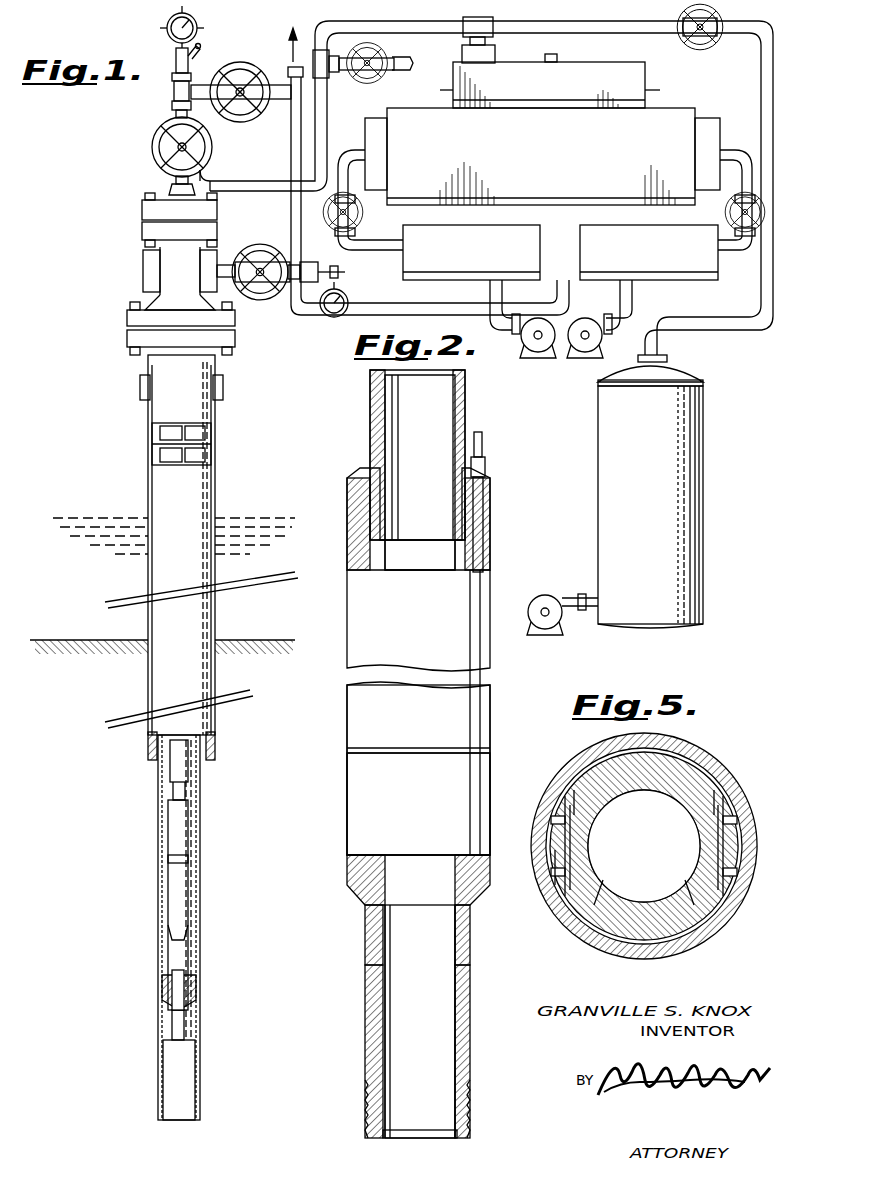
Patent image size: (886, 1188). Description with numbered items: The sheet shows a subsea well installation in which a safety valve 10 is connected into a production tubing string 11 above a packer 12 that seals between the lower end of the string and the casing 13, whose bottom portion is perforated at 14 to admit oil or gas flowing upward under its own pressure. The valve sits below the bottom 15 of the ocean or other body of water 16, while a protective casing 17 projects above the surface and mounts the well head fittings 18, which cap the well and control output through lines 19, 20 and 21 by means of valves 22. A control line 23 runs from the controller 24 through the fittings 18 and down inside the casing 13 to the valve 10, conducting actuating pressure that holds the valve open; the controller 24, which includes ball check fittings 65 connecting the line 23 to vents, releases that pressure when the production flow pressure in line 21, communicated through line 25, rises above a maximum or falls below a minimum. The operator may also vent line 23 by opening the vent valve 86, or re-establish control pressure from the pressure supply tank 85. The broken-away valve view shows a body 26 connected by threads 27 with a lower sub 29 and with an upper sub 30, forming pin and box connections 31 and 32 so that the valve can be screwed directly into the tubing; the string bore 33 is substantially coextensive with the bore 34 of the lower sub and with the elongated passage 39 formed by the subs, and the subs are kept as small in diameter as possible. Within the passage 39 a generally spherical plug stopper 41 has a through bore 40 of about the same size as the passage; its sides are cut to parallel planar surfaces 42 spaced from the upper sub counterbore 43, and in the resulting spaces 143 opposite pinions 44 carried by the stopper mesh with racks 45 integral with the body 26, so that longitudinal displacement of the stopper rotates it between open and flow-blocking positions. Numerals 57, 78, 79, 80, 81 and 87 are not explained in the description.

In FIG. 1, the safety valve 10 is at (168, 826).
In FIG. 2, the safety valve 10 is at (332, 751).
In FIG. 1, the production tubing string 11 is at (170, 436).
In FIG. 1, the packer 12 is at (198, 990).
In FIG. 1, the casing 13 is at (210, 462).
In FIG. 1, the perforations 14 is at (200, 1074).
In FIG. 1, the bottom of the ocean 15 is at (246, 640).
In FIG. 1, the body of water 16 is at (248, 518).
In FIG. 1, the protective casing 17 is at (210, 442).
In FIG. 1, the well head fittings 18 is at (130, 213).
In FIG. 1, the line 19 is at (176, 111).
In FIG. 1, the line 20 is at (193, 58).
In FIG. 1, the line 21 is at (292, 74).
In FIG. 1, the valves 22 is at (199, 149).
In FIG. 1, the control line 23 is at (328, 100).
In FIG. 1, the controller 24 is at (686, 98).
In FIG. 1, the line 25 is at (396, 313).
In FIG. 2, the body 26 is at (350, 804).
In FIG. 2, the threads 27 is at (350, 896).
In FIG. 2, the lower sub 29 is at (366, 932).
In FIG. 2, the upper sub 30 is at (350, 652).
In FIG. 5, the upper sub 30 is at (686, 750).
In FIG. 2, the pin connection 31 is at (368, 1108).
In FIG. 2, the box connection 32 is at (456, 524).
In FIG. 2, the string bore 33 is at (456, 494).
In FIG. 2, the bore of the lower sub 34 is at (456, 1024).
In FIG. 2, the elongated passage 39 is at (420, 839).
In FIG. 5, the elongated passage 39 is at (644, 846).
In FIG. 5, the through bore 40 is at (612, 800).
In FIG. 5, the plug stopper 41 is at (600, 894).
In FIG. 5, the planar surfaces 42 is at (722, 894).
In FIG. 5, the upper sub counterbore 43 is at (730, 888).
In FIG. 5, the pinions 44 is at (740, 822).
In FIG. 5, the racks 45 is at (728, 790).
In FIG. 2, the wire line 57 is at (486, 531).
In FIG. 1, the ball check fittings 65 is at (490, 50).
In FIG. 1, the tank 78 is at (471, 252).
In FIG. 1, the tank 79 is at (649, 252).
In FIG. 1, the valve 80 is at (352, 238).
In FIG. 1, the valve 81 is at (738, 182).
In FIG. 1, the pressure supply tank 85 is at (615, 495).
In FIG. 1, the vent valve 86 is at (380, 58).
In FIG. 1, the valve 87 is at (680, 16).
In FIG. 5, the spaces 143 is at (556, 890).